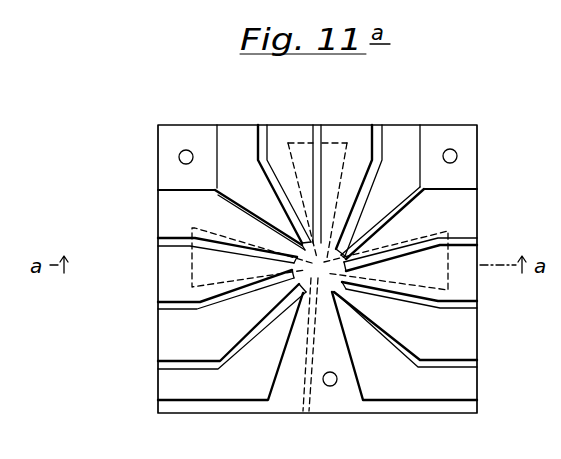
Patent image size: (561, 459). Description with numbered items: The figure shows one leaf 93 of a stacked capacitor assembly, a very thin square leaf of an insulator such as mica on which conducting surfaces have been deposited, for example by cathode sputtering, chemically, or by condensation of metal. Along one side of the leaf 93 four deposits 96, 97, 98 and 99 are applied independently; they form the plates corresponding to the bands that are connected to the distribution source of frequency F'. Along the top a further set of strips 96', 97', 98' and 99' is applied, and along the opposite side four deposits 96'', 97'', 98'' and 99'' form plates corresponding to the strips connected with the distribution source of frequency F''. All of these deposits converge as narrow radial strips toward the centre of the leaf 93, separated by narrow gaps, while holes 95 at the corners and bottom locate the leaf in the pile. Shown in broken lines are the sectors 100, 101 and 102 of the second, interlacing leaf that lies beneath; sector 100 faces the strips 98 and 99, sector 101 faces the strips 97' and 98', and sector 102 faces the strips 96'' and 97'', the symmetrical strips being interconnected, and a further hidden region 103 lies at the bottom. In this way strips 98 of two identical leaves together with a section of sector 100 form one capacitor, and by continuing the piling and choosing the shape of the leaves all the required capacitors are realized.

The leaf 93 is at (478, 127).
The mounting holes 95 is at (179, 154).
The deposit 96 is at (166, 383).
The deposit 97 is at (166, 333).
The deposit 98 is at (166, 283).
The deposit 99 is at (170, 205).
The strip 96' is at (260, 167).
The strip 97' is at (290, 167).
The strip 98' is at (360, 168).
The strip 99' is at (390, 174).
The deposit 96'' is at (442, 234).
The deposit 97'' is at (446, 300).
The deposit 98'' is at (442, 321).
The deposit 99'' is at (440, 345).
The sector 100 is at (190, 266).
The sector 101 is at (340, 140).
The sector 102 is at (452, 231).
The hidden channel 103 is at (301, 399).